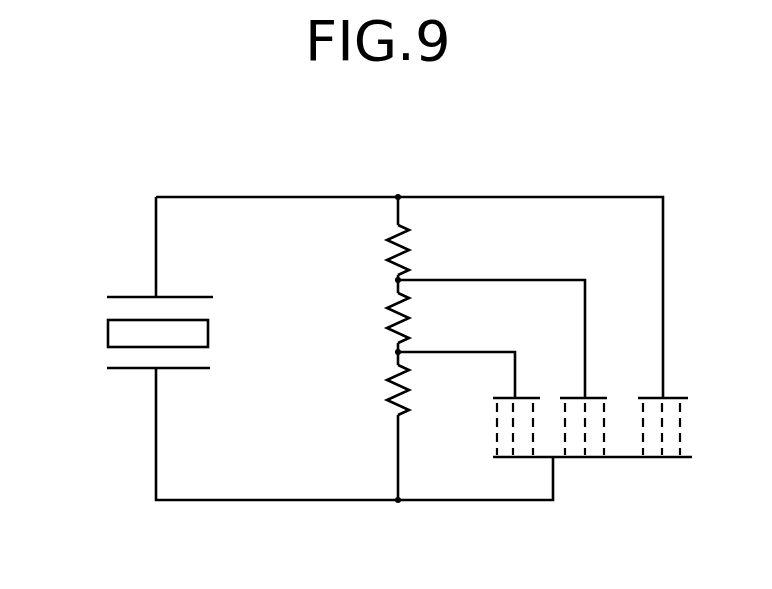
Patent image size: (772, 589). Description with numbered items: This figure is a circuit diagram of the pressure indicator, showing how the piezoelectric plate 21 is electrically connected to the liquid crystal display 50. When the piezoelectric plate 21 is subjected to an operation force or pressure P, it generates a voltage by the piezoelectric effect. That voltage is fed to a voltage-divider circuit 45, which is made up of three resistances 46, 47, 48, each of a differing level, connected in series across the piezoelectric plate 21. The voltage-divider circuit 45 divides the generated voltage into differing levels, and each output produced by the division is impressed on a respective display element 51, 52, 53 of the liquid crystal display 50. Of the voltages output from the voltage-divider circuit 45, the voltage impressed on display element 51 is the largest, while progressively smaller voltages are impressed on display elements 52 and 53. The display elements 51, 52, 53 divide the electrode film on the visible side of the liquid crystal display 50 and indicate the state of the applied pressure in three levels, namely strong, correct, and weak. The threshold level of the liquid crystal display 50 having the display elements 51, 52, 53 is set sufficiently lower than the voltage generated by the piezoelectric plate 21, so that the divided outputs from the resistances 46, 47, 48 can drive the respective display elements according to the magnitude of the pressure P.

The pressure P is at (122, 276).
The piezoelectric plate 21 is at (96, 352).
The voltage-divider circuit 45 is at (292, 92).
The resistance 46 is at (380, 245).
The resistance 47 is at (390, 320).
The resistance 48 is at (382, 385).
The liquid crystal display 50 is at (609, 439).
The display element 51 is at (675, 392).
The display element 52 is at (597, 392).
The display element 53 is at (528, 392).